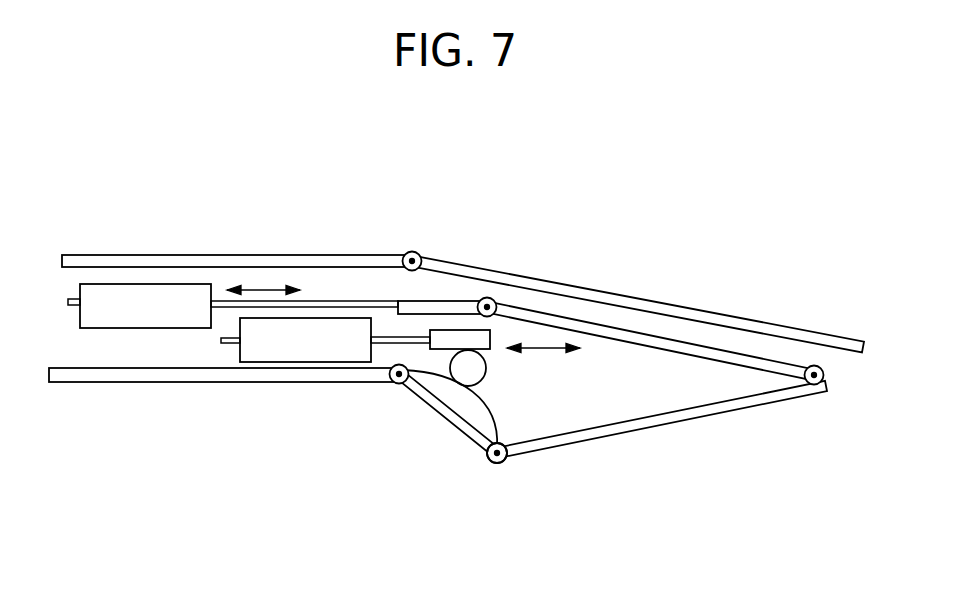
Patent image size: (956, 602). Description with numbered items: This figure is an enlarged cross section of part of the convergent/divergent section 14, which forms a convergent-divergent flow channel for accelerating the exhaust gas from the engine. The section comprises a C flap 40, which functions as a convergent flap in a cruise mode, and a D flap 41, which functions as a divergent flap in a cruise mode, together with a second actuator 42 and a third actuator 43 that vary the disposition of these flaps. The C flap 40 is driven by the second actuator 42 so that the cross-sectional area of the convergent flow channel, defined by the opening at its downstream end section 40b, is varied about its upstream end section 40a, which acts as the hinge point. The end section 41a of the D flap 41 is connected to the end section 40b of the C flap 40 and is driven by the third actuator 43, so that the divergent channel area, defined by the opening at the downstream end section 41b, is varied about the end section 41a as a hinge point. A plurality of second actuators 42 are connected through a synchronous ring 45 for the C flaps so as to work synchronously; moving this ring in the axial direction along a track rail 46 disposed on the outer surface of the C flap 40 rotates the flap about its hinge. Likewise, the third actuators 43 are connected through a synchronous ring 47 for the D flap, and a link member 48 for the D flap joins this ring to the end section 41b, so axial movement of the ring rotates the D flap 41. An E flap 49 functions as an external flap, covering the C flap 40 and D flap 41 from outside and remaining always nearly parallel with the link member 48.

The convergent/divergent section 14 is at (568, 187).
The C flap 40 is at (450, 428).
The end section 40a is at (390, 380).
The end section 40b is at (493, 465).
The D flap 41 is at (710, 418).
The end section 41a is at (532, 482).
The end section 41b is at (814, 366).
The second actuator 42 is at (240, 352).
The third actuator 43 is at (122, 328).
The synchronous ring for C flaps 45 is at (465, 330).
The track rail 46 is at (487, 409).
The synchronous ring for D flap 47 is at (400, 301).
The link member for D flap 48 is at (632, 332).
The E flap 49 is at (715, 310).